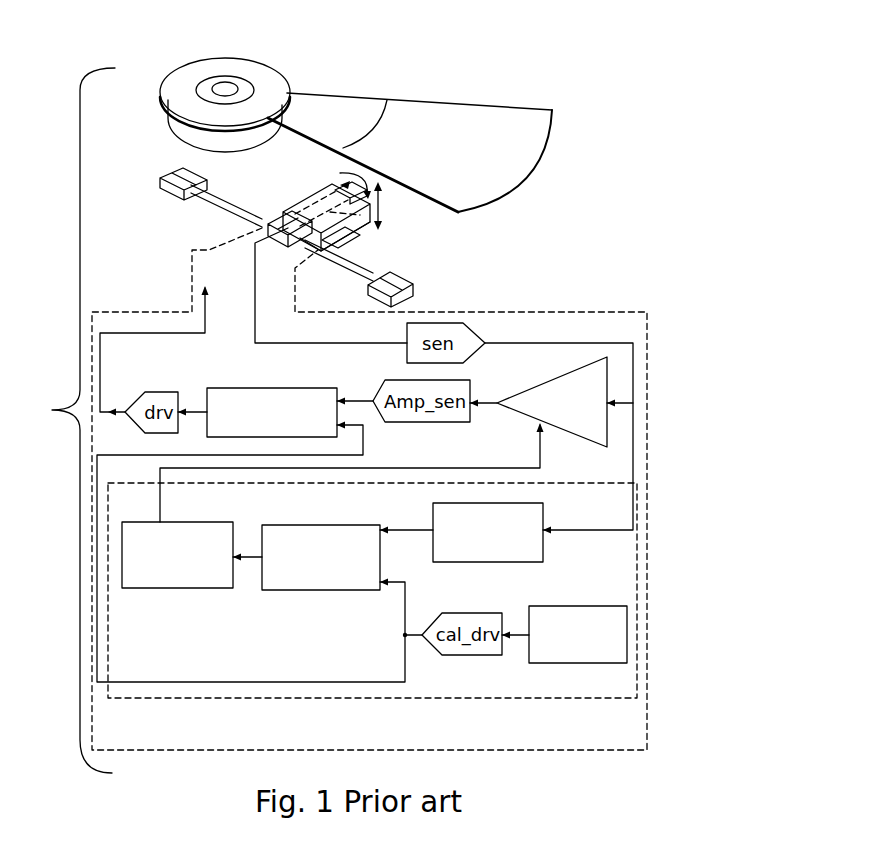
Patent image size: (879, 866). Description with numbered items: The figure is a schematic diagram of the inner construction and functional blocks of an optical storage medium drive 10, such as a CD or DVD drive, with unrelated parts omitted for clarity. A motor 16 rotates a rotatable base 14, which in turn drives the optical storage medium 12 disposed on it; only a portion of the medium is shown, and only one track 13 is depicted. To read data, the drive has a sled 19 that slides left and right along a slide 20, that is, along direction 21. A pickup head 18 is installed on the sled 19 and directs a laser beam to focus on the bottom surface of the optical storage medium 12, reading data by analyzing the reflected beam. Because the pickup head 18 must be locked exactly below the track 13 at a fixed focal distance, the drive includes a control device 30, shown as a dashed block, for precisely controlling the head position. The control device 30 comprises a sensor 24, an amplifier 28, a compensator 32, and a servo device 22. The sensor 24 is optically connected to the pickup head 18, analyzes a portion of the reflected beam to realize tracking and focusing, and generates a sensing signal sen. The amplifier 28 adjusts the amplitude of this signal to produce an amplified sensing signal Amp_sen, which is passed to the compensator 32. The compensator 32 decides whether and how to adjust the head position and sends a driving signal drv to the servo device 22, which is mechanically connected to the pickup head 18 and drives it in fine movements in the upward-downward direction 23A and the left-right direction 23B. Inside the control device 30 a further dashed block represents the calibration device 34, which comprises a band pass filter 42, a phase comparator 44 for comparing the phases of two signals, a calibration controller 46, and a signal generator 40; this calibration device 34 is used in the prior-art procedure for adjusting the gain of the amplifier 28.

The optical storage medium drive 10 is at (52, 410).
The optical storage medium 12 is at (487, 113).
The track 13 is at (387, 100).
The rotatable base 14 is at (226, 90).
The motor 16 is at (172, 117).
The pickup head 18 is at (310, 195).
The sled 19 is at (372, 228).
The slide 20 is at (228, 218).
The direction 21 is at (227, 207).
The servo device 22 is at (290, 214).
The upward-downward direction 23A is at (379, 208).
The left-right direction 23B is at (336, 178).
The sensor 24 is at (336, 232).
The amplifier 28 is at (553, 428).
The control device 30 is at (510, 312).
The compensator 32 is at (275, 388).
The calibration device 34 is at (407, 700).
The signal generator 40 is at (556, 606).
The band pass filter 42 is at (527, 562).
The phase comparator 44 is at (292, 590).
The calibration controller 46 is at (165, 588).